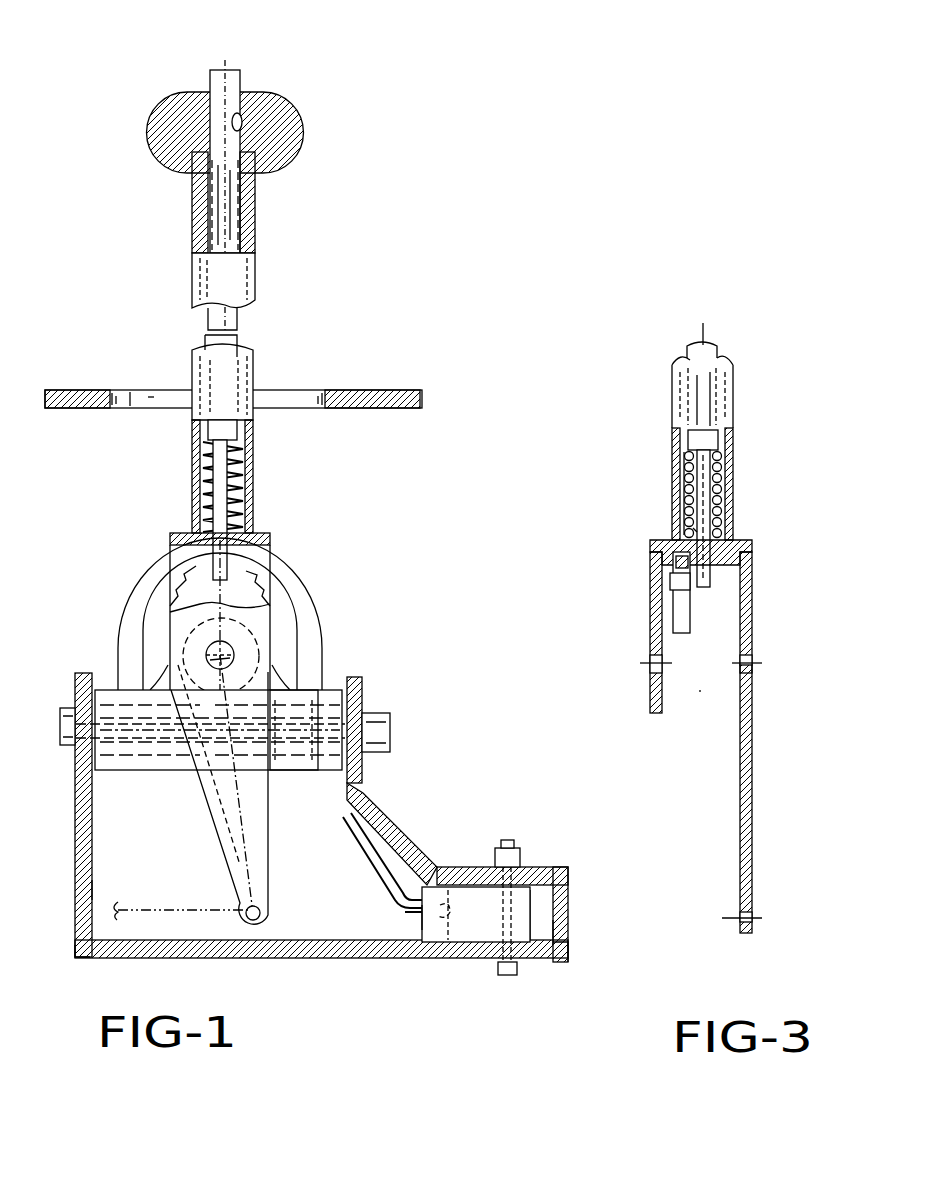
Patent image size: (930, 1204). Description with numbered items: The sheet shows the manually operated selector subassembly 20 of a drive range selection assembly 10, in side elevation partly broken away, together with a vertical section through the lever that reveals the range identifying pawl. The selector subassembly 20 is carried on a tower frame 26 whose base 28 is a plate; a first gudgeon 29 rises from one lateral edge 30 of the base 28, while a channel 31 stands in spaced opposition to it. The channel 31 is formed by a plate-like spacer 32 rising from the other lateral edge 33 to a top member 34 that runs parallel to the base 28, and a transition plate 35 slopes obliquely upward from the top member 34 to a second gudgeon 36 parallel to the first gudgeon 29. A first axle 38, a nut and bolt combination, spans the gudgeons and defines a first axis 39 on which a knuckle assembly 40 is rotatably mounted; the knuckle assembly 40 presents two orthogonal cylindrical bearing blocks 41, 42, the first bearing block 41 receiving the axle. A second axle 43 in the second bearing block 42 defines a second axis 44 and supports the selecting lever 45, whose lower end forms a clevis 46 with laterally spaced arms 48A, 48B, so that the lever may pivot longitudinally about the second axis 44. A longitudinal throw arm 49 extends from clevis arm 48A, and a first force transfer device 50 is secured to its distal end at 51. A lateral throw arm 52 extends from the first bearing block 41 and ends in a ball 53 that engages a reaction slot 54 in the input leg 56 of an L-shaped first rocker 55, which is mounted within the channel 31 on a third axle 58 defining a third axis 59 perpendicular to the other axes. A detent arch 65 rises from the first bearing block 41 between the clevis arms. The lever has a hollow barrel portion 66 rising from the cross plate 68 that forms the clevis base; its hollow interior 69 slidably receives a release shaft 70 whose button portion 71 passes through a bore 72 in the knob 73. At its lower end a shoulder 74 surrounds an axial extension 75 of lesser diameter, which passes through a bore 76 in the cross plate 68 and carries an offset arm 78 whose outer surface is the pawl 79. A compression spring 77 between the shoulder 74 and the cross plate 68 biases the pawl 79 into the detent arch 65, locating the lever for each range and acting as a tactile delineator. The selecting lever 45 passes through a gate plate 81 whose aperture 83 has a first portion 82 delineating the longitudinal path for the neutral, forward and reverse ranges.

In FIG. 1, the drive range selection assembly 10 is at (426, 122).
In FIG. 1, the selector subassembly 20 is at (338, 324).
In FIG. 1, the tower frame 26 is at (88, 888).
In FIG. 1, the base 28 is at (270, 958).
In FIG. 1, the first gudgeon 29 is at (84, 828).
In FIG. 1, the lateral edge 30 is at (76, 958).
In FIG. 1, the channel 31 is at (555, 932).
In FIG. 1, the spacer 32 is at (570, 911).
In FIG. 1, the other lateral edge 33 is at (568, 962).
In FIG. 1, the top member 34 is at (455, 868).
In FIG. 1, the transition plate 35 is at (410, 842).
In FIG. 1, the second gudgeon 36 is at (356, 692).
In FIG. 1, the first axle 38 is at (66, 750).
In FIG. 1, the first axis 39 is at (386, 734).
In FIG. 1, the knuckle assembly 40 is at (120, 777).
In FIG. 1, the first bearing block 41 is at (285, 762).
In FIG. 1, the second bearing block 42 is at (260, 646).
In FIG. 1, the second axle 43 is at (228, 652).
In FIG. 1, the second axis 44 is at (212, 662).
In FIG. 3, the second axis 44 is at (754, 664).
In FIG. 1, the selecting lever 45 is at (270, 290).
In FIG. 3, the selecting lever 45 is at (670, 400).
In FIG. 3, the clevis 46 is at (699, 694).
In FIG. 3, the clevis arm 48A is at (752, 628).
In FIG. 3, the clevis arm 48B is at (652, 628).
In FIG. 1, the longitudinal throw arm 49 is at (263, 840).
In FIG. 3, the longitudinal throw arm 49 is at (752, 846).
In FIG. 1, the first force transfer device 50 is at (146, 909).
In FIG. 1, the attachment point 51 is at (247, 906).
In FIG. 1, the lateral throw arm 52 is at (363, 870).
In FIG. 1, the ball 53 is at (445, 950).
In FIG. 1, the reaction slot 54 is at (402, 954).
In FIG. 1, the first rocker 55 is at (533, 898).
In FIG. 1, the input leg 56 is at (470, 906).
In FIG. 1, the third axle 58 is at (522, 858).
In FIG. 1, the third axis 59 is at (508, 846).
In FIG. 1, the detent arch 65 is at (128, 614).
In FIG. 3, the detent arch 65 is at (692, 620).
In FIG. 1, the barrel portion 66 is at (196, 222).
In FIG. 3, the barrel portion 66 is at (672, 478).
In FIG. 1, the cross plate 68 is at (259, 539).
In FIG. 3, the cross plate 68 is at (752, 572).
In FIG. 1, the hollow interior 69 is at (240, 432).
In FIG. 3, the hollow interior 69 is at (718, 442).
In FIG. 1, the release shaft 70 is at (228, 200).
In FIG. 3, the release shaft 70 is at (700, 340).
In FIG. 1, the button portion 71 is at (216, 82).
In FIG. 1, the bore 72 is at (242, 116).
In FIG. 1, the knob 73 is at (160, 130).
In FIG. 1, the shoulder 74 is at (200, 456).
In FIG. 3, the shoulder 74 is at (686, 462).
In FIG. 1, the axial extension 75 is at (204, 528).
In FIG. 3, the axial extension 75 is at (712, 506).
In FIG. 3, the bore 76 is at (696, 530).
In FIG. 1, the compression spring 77 is at (242, 467).
In FIG. 3, the compression spring 77 is at (722, 470).
In FIG. 3, the offset arm 78 is at (670, 590).
In FIG. 3, the pawl 79 is at (676, 562).
In FIG. 1, the gate plate 81 is at (402, 392).
In FIG. 1, the first portion 82 is at (140, 408).
In FIG. 1, the gate plate aperture 83 is at (150, 394).